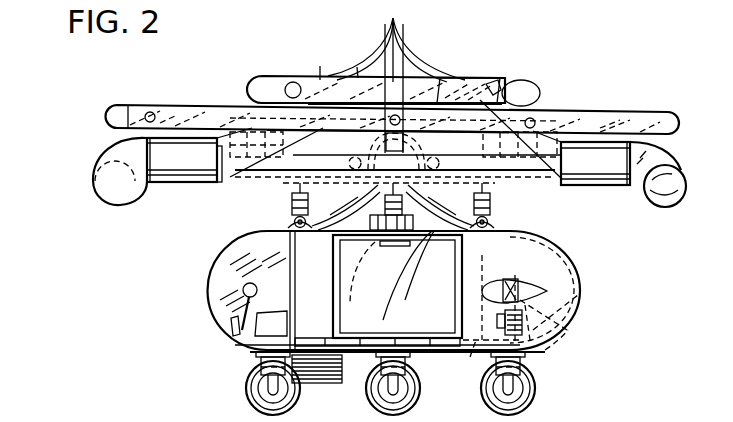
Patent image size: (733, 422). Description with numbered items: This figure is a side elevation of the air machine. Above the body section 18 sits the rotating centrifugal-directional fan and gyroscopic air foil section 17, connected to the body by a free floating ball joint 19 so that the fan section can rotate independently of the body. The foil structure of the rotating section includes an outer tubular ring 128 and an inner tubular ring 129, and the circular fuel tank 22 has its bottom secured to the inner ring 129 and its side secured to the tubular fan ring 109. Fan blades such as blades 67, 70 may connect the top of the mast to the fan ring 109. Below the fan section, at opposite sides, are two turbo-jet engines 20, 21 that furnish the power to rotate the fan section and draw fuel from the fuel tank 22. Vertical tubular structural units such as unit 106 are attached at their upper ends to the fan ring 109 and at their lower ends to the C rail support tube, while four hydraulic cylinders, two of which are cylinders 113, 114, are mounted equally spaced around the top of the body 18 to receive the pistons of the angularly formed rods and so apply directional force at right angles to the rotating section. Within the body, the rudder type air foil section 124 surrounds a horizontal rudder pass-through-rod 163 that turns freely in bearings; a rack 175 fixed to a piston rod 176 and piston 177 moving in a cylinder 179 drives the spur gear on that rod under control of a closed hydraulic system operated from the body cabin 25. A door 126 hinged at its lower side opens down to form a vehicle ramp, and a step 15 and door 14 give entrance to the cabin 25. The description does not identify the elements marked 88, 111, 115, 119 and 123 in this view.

The door 14 is at (257, 347).
The step 15 is at (308, 383).
The centrifugal-directional fan and gyroscopic air foil section 17 is at (240, 80).
The body section 18 is at (211, 301).
The free floating ball joint 19 is at (368, 144).
The turbo-jet engine 20 is at (182, 186).
The turbo-jet engine 21 is at (610, 186).
The circular fuel tank 22 is at (538, 93).
The body cabin 25 is at (213, 276).
The fan blade 67 is at (426, 61).
The fan blade 70 is at (358, 66).
The engine compartment 88 is at (378, 290).
The tubular structural unit 106 is at (409, 145).
The tubular fan ring 109 is at (491, 81).
The drive shaft 111 is at (430, 264).
The hydraulic cylinder 113 is at (291, 207).
The hydraulic cylinder 114 is at (494, 212).
The transmission 115 is at (407, 294).
The control shaft 119 is at (407, 282).
The engine 123 is at (370, 250).
The rudder type air foil section 124 is at (500, 265).
The door 126 is at (470, 357).
The outer tubular ring 128 is at (106, 111).
The inner tubular ring 129 is at (243, 110).
The horizontal rudder pass-through-rod 163 is at (510, 283).
The rack 175 is at (473, 373).
The piston rod 176 is at (548, 338).
The piston 177 is at (533, 352).
The cylinder 179 is at (562, 345).